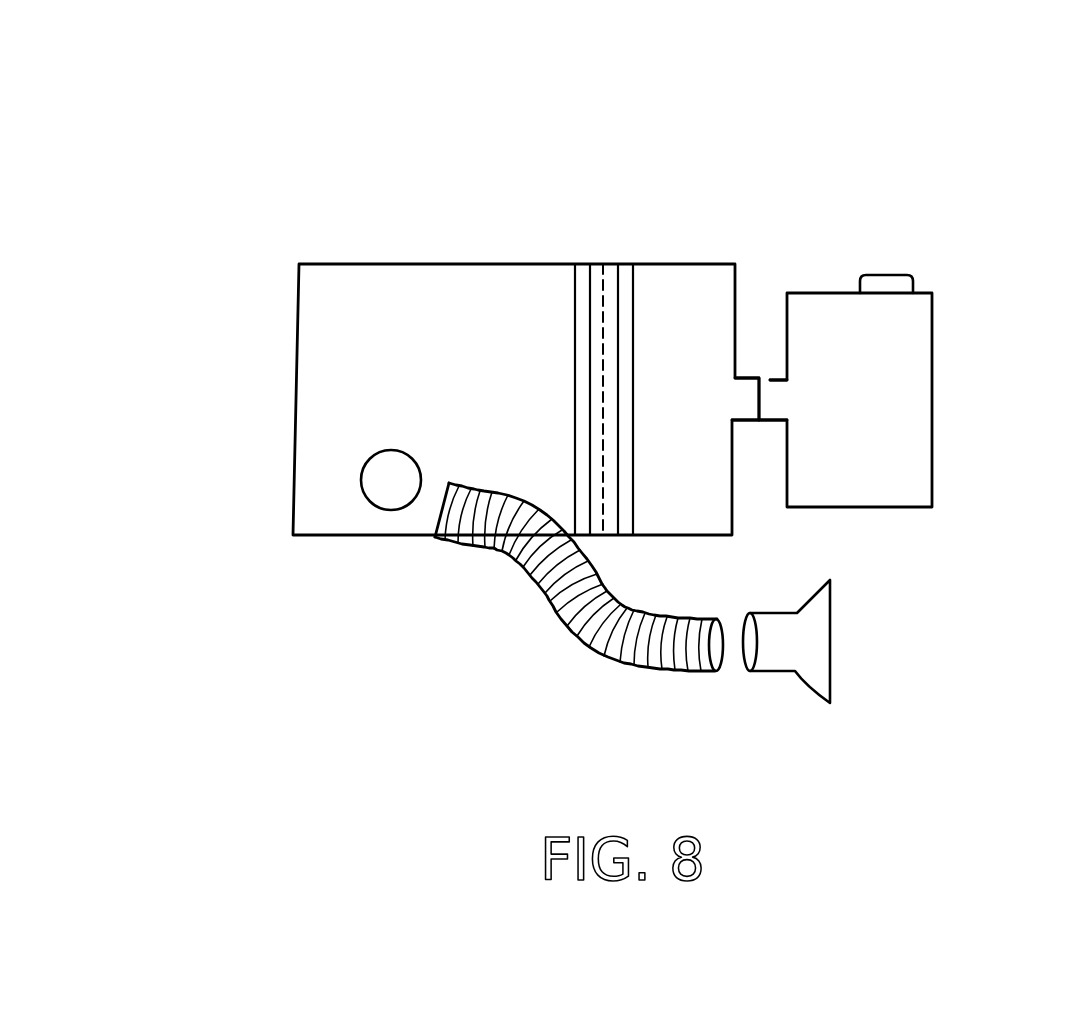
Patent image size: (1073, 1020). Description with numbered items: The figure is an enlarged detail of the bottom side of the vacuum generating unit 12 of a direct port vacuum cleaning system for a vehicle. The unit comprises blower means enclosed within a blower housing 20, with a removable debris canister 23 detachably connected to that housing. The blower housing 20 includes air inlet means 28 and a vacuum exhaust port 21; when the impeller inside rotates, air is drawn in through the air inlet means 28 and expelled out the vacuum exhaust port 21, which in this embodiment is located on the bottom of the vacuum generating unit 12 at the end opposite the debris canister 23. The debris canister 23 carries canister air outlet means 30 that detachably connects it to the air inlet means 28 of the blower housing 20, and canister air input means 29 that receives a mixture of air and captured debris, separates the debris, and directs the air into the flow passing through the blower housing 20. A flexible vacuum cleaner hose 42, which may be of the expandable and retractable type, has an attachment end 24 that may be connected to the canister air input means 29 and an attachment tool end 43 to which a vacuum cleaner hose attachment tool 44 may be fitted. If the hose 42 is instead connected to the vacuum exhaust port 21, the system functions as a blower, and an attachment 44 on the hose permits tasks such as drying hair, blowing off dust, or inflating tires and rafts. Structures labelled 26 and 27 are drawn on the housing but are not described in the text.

The vacuum generating unit 12 is at (597, 164).
The blower housing 20 is at (284, 393).
The vacuum exhaust port 21 is at (389, 511).
The debris canister 23 is at (933, 387).
The vacuum cleaner hose attachment end 24 is at (908, 274).
The filter strip 26 is at (582, 275).
The filter strip 27 is at (628, 275).
The air inlet means 28 is at (746, 392).
The canister air input means 29 is at (886, 244).
The canister air outlet means 30 is at (770, 388).
The vacuum cleaner hose 42 is at (618, 661).
The attachment tool end 43 is at (717, 673).
The vacuum cleaner hose attachment tool 44 is at (832, 683).